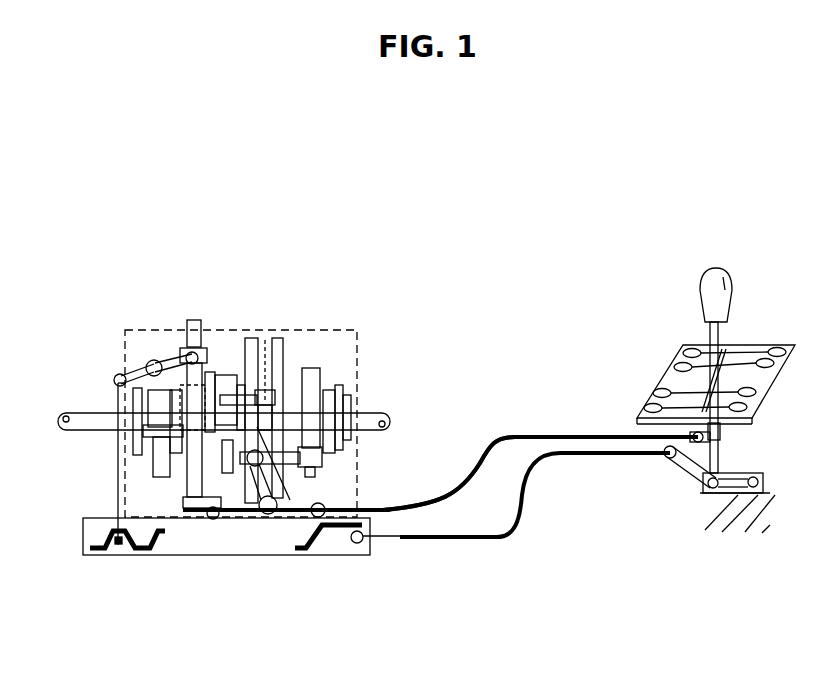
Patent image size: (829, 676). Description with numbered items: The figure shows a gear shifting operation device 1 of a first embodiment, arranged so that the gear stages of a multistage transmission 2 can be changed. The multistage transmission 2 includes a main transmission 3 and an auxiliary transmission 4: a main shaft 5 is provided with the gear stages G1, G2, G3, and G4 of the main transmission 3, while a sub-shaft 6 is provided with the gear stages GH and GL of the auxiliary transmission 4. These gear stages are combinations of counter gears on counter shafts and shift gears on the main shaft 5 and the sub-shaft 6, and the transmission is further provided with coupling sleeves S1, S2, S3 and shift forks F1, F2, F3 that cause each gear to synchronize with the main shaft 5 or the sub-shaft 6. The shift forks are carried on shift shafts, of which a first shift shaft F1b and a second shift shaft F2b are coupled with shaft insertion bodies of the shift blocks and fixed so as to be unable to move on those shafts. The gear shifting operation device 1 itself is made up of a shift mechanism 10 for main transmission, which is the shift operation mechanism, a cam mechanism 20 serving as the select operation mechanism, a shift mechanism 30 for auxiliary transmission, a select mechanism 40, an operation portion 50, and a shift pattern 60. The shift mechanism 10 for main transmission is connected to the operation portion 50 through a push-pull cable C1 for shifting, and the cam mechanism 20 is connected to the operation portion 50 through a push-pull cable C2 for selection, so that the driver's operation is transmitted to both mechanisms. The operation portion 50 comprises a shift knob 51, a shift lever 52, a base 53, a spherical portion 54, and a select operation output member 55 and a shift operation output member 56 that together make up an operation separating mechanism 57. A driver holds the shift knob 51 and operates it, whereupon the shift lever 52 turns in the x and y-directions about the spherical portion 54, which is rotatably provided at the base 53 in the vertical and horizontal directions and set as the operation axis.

The gear shifting operation device 1 is at (510, 330).
The multistage transmission 2 is at (100, 308).
The main transmission 3 is at (112, 338).
The auxiliary transmission 4 is at (357, 374).
The main shaft 5 is at (90, 430).
The sub-shaft 6 is at (383, 414).
The shift mechanism for main transmission 10 is at (207, 510).
The cam mechanism 20 is at (152, 548).
The shift mechanism for auxiliary transmission 30 is at (432, 495).
The select mechanism 40 is at (114, 380).
The operation portion 50 is at (700, 270).
The shift knob 51 is at (722, 288).
The shift lever 52 is at (735, 345).
The base 53 is at (748, 510).
The spherical portion 54 is at (702, 512).
The select operation output member 55 is at (690, 500).
The shift operation output member 56 is at (673, 465).
The operation separating mechanism 57 is at (660, 463).
The shift pattern 60 is at (690, 365).
The push-pull cable for shifting C1 is at (508, 440).
The push-pull cable for selection C2 is at (513, 505).
The shift fork F1 is at (162, 400).
The shift fork F2 is at (245, 340).
The shift fork F3 is at (360, 355).
The first shift shaft F1b is at (300, 542).
The second shift shaft F2b is at (200, 512).
The gear stage G1 is at (125, 335).
The gear stage G2 is at (183, 345).
The gear stage G3 is at (208, 340).
The gear stage G4 is at (257, 340).
The gear stage GH is at (293, 340).
The gear stage GL is at (372, 360).
The coupling sleeve S1 is at (150, 380).
The coupling sleeve S2 is at (228, 340).
The coupling sleeve S3 is at (332, 345).